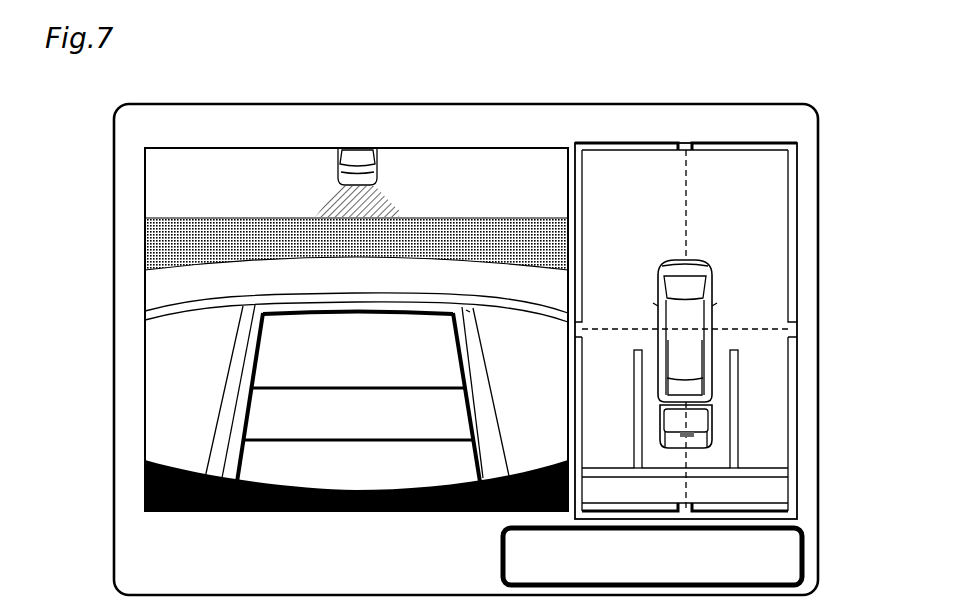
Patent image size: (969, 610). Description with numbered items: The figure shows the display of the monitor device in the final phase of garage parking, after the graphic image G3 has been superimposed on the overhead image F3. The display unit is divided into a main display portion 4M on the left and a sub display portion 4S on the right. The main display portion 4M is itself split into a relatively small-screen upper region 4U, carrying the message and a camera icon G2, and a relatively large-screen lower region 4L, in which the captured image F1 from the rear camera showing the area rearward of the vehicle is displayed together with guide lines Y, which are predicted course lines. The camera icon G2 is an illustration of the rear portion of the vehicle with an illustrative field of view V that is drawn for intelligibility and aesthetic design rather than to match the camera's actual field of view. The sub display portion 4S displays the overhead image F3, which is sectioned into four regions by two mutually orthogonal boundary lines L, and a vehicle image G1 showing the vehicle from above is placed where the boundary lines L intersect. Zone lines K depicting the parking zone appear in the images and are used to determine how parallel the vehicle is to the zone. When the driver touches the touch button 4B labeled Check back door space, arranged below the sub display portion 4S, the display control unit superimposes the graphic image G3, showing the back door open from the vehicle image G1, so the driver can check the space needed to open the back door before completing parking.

The main display portion 4M is at (145, 190).
The upper region 4U is at (517, 172).
The sub display portion 4S is at (721, 297).
The lower region 4L is at (309, 329).
The touch button 4B is at (803, 553).
The captured image F1 is at (157, 291).
The overhead image F3 is at (768, 248).
The vehicle image G1 is at (713, 295).
The camera icon G2 is at (338, 166).
The graphic image G3 is at (660, 425).
The field of view V is at (390, 192).
The guide lines Y is at (248, 362).
The zone lines K is at (495, 382).
The boundary lines L is at (688, 205).